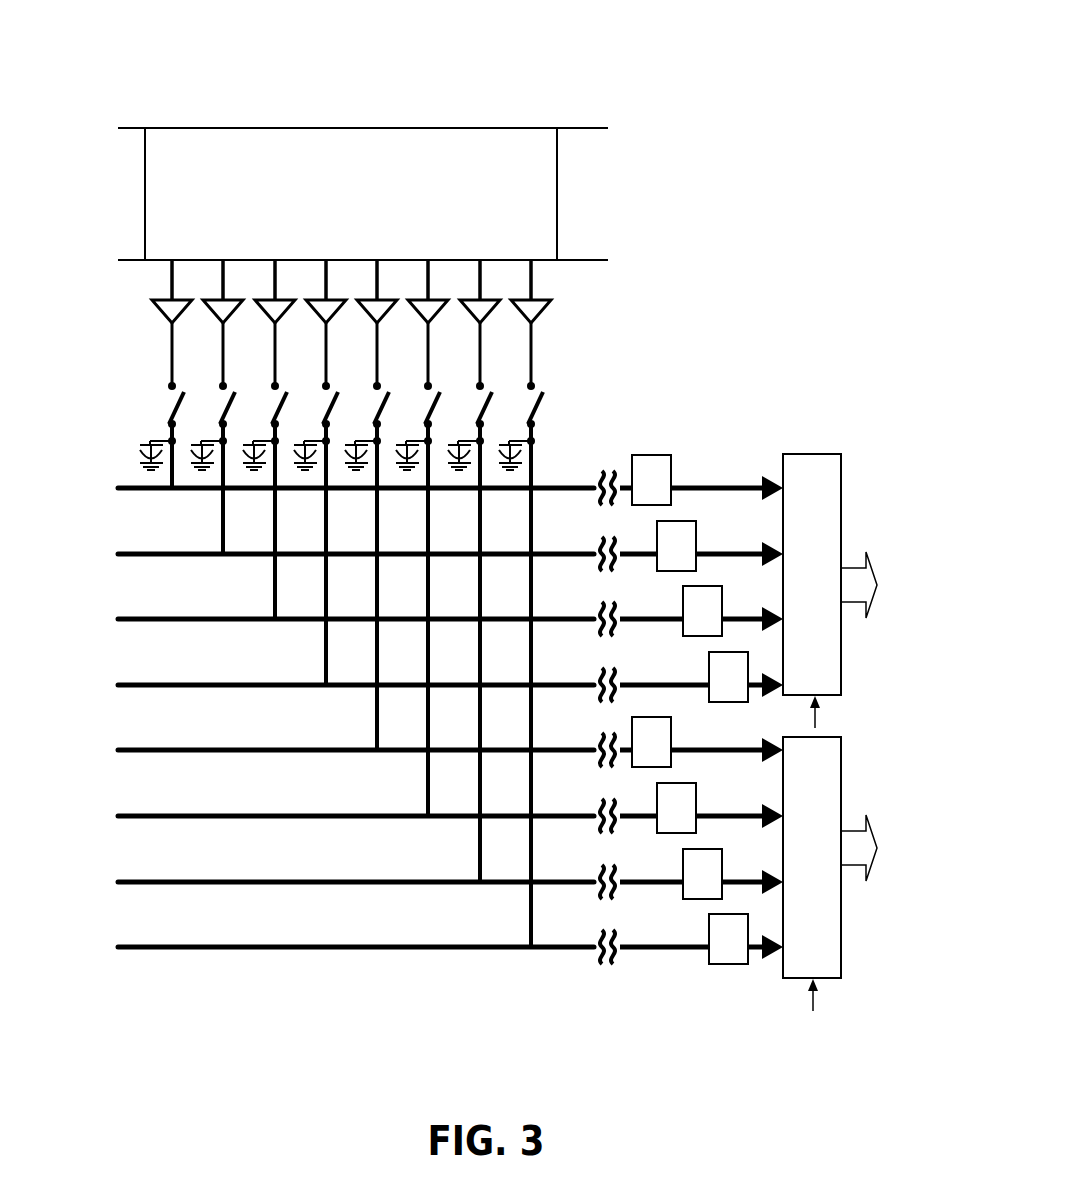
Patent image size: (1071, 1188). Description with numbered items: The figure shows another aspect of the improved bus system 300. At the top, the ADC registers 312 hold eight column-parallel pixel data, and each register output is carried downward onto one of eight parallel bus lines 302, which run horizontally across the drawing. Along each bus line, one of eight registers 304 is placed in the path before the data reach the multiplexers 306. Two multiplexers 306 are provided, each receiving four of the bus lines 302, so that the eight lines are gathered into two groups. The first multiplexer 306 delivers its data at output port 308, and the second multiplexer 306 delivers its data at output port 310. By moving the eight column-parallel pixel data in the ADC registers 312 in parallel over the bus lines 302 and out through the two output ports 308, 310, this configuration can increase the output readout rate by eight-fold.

The bus system 300 is at (732, 52).
The parallel bus lines 302 is at (103, 482).
The registers 304 is at (741, 451).
The multiplexers 306 is at (841, 455).
The output port 308 is at (885, 585).
The output port 310 is at (885, 848).
The ADC registers 312 is at (363, 194).